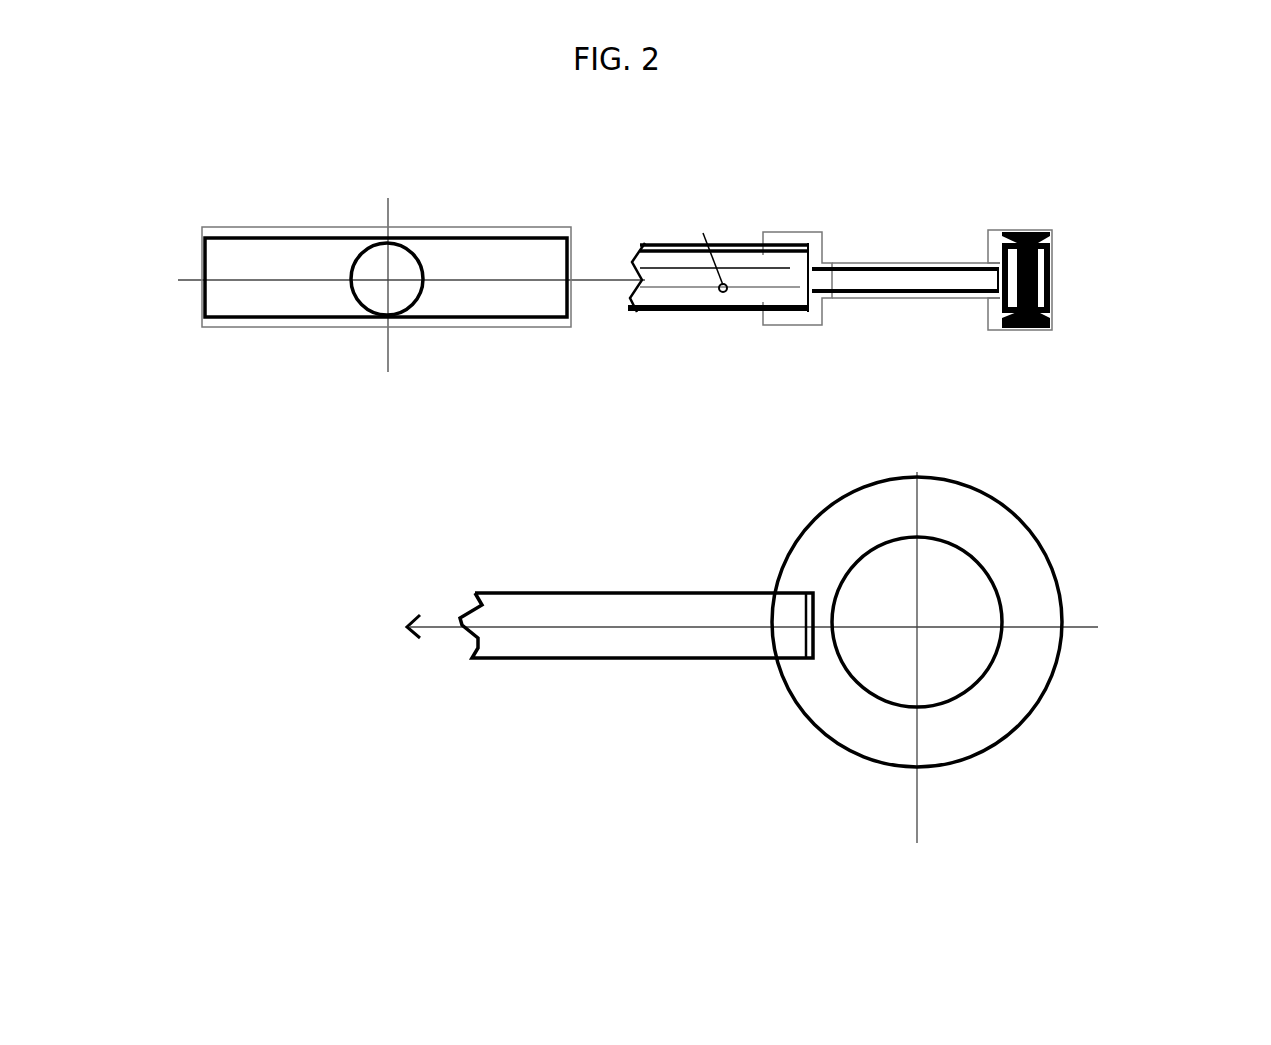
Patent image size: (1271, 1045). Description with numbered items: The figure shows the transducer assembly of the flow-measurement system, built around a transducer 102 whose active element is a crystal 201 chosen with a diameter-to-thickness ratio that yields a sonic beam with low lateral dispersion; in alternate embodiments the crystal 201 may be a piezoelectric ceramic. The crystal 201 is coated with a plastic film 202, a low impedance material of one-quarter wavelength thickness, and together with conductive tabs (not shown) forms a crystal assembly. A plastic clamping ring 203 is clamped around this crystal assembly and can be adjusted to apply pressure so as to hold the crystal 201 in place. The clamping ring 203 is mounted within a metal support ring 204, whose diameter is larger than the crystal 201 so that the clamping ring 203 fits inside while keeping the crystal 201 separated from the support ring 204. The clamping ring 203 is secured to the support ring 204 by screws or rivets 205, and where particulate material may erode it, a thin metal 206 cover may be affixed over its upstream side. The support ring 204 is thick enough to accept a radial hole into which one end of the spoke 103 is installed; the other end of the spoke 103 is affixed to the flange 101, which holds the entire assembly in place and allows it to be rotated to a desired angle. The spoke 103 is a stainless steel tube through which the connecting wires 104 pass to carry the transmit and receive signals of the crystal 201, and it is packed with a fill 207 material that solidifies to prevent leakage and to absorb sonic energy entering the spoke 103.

The flange 101 is at (303, 632).
The transducer 102 is at (754, 629).
The spoke 103 is at (486, 420).
The connecting wires 104 is at (608, 223).
The crystal 201 is at (849, 332).
The plastic film 202 is at (916, 209).
The clamping ring 203 is at (631, 210).
The support ring 204 is at (945, 436).
The rivets 205 is at (1110, 245).
The thin metal 206 is at (528, 522).
The fill 207 is at (641, 320).